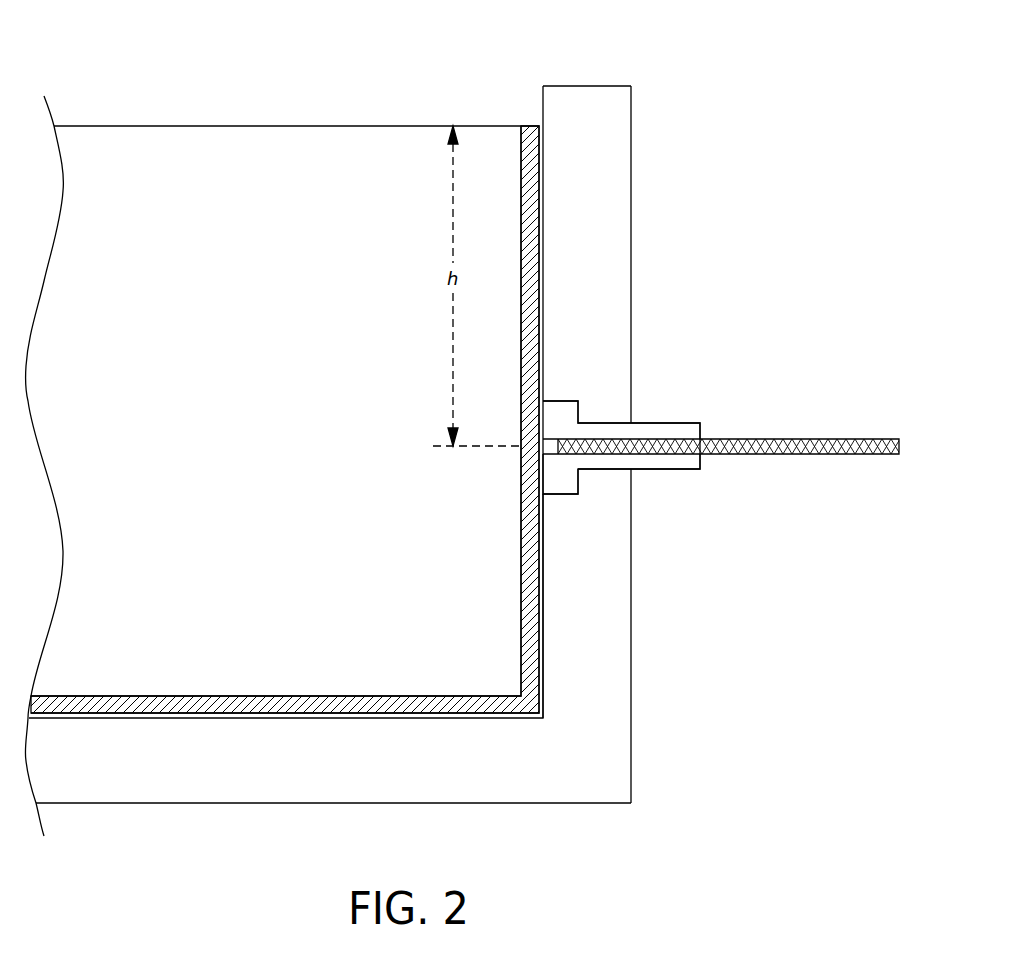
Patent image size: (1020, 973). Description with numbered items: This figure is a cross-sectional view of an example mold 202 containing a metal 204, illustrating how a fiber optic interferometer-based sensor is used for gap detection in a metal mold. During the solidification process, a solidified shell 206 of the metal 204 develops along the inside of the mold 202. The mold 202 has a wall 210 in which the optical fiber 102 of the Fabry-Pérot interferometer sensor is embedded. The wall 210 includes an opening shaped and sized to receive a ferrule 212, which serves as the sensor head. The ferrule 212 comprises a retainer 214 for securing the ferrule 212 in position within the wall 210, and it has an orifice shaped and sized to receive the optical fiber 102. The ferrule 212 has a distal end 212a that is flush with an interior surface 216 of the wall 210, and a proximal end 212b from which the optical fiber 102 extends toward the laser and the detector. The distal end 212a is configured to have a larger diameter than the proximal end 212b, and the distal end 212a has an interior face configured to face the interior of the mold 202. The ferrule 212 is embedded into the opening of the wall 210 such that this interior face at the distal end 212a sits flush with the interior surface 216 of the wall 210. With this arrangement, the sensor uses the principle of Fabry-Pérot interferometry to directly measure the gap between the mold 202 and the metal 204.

The optical fiber 102 is at (787, 437).
The mold 202 is at (330, 444).
The metal 204 is at (287, 198).
The solidified shell 206 is at (527, 125).
The wall 210 is at (630, 242).
The ferrule 212 is at (667, 470).
The distal end 212a is at (545, 478).
The proximal end 212b is at (700, 463).
The retainer 214 is at (563, 398).
The interior surface 216 is at (545, 558).